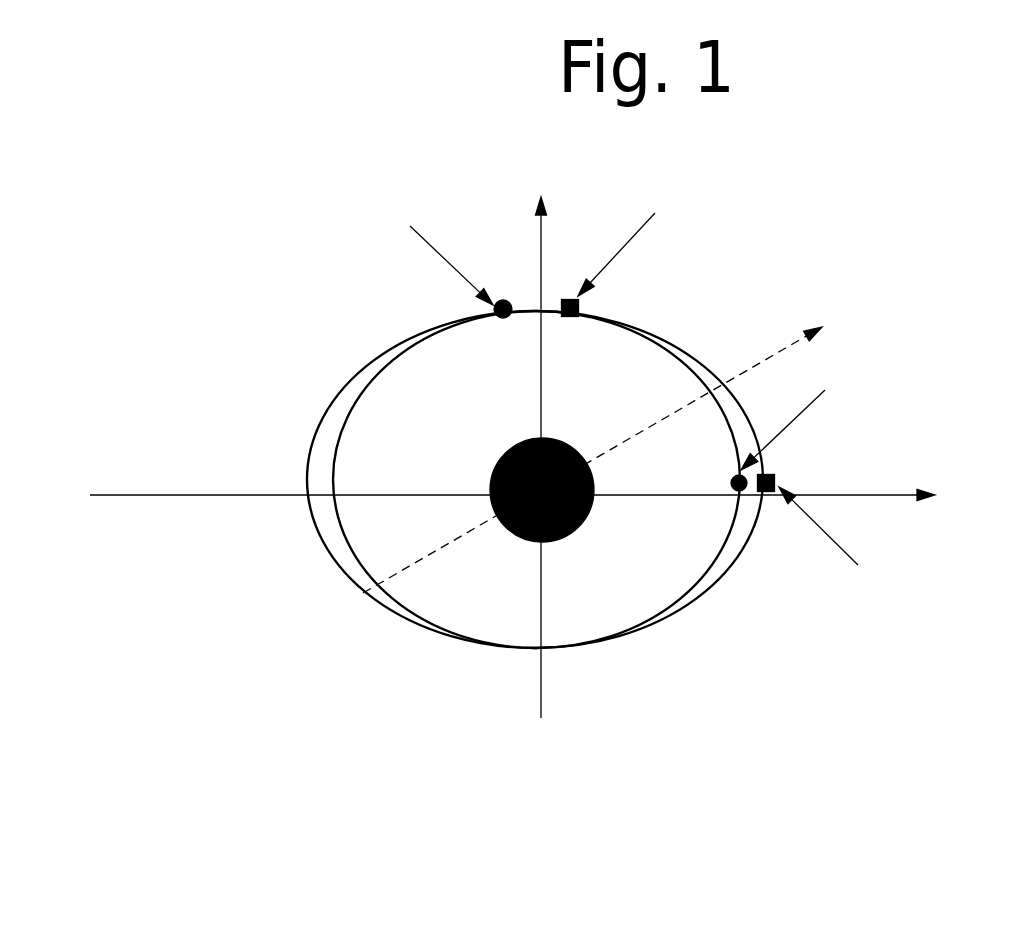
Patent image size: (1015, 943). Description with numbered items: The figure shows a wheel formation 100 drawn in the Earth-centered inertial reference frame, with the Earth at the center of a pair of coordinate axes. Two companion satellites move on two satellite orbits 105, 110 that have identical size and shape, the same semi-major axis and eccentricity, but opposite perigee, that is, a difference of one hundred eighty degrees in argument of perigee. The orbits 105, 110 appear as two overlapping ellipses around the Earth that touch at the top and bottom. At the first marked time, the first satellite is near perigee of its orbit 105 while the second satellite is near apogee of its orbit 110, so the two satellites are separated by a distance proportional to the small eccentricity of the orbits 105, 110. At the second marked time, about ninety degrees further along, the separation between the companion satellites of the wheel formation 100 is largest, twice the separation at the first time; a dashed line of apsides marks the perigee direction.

The wheel formation 100 is at (142, 245).
The satellite orbit 110 is at (288, 414).
The satellite orbit 105 is at (326, 545).